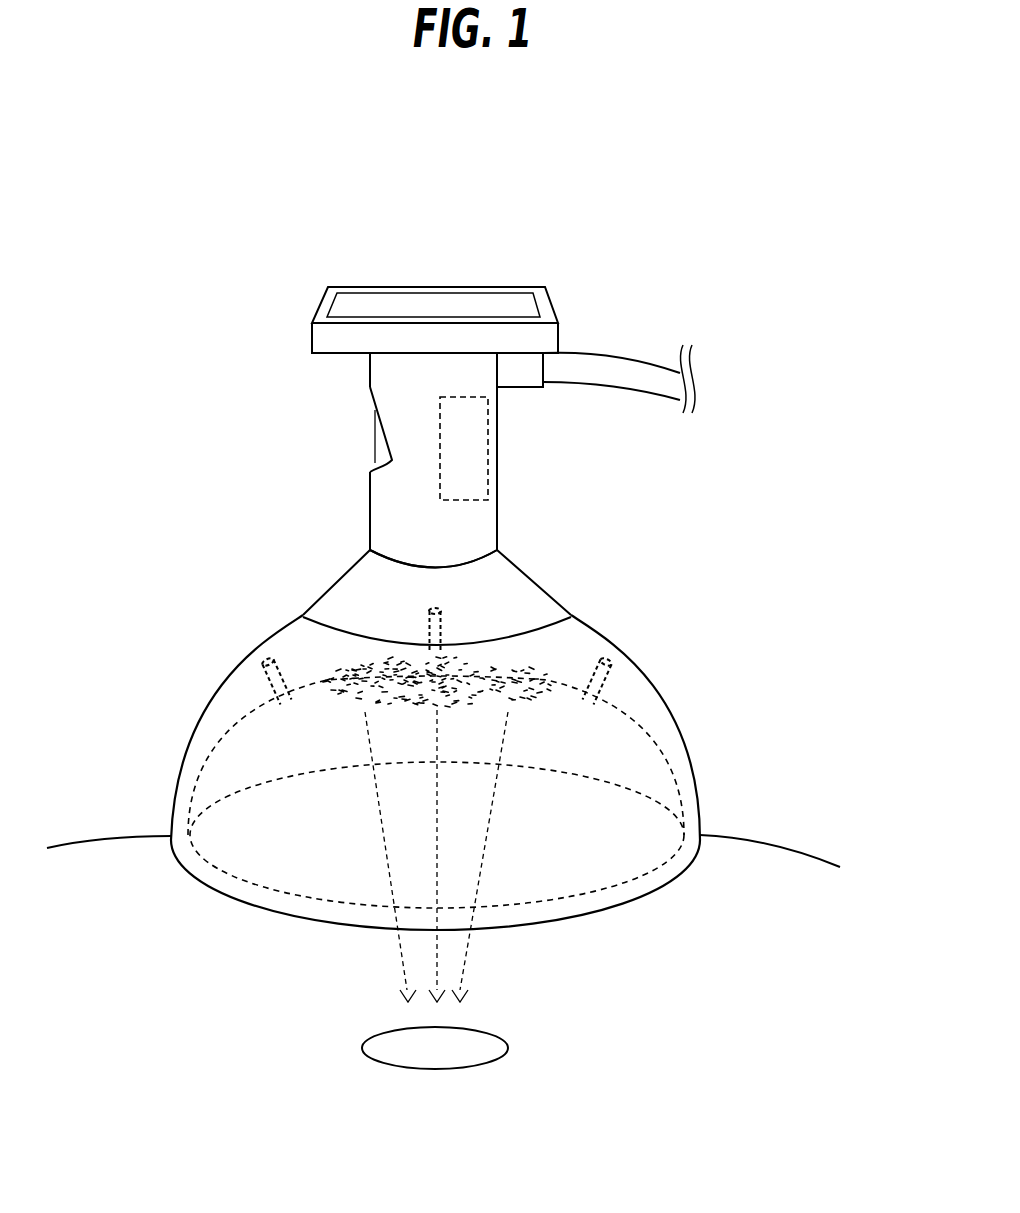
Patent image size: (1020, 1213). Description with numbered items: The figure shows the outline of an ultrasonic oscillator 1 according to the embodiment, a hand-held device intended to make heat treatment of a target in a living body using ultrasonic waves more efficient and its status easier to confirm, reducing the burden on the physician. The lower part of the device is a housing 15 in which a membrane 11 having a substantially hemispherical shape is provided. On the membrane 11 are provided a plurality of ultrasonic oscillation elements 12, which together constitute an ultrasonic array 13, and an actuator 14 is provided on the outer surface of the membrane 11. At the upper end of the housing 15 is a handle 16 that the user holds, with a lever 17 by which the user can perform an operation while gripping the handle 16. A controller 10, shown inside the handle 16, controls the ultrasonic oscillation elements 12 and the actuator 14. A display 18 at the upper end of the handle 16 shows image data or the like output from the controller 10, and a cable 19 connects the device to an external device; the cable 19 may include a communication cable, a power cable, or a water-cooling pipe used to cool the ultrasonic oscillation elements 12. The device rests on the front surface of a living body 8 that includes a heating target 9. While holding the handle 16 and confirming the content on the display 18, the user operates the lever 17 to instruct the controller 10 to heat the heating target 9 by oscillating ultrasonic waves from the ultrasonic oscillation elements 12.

The beauty treatment device 1 is at (611, 233).
The living body 8 is at (767, 842).
The heating target 9 is at (507, 1047).
The controller 10 is at (490, 452).
The membrane 11 is at (652, 757).
The ultrasonic oscillation elements 12 is at (477, 665).
The ultrasonic array 13 is at (540, 672).
The actuator 14 is at (427, 635).
The housing 15 is at (694, 797).
The handle 16 is at (370, 517).
The lever 17 is at (375, 443).
The display 18 is at (322, 307).
The cable 19 is at (600, 353).